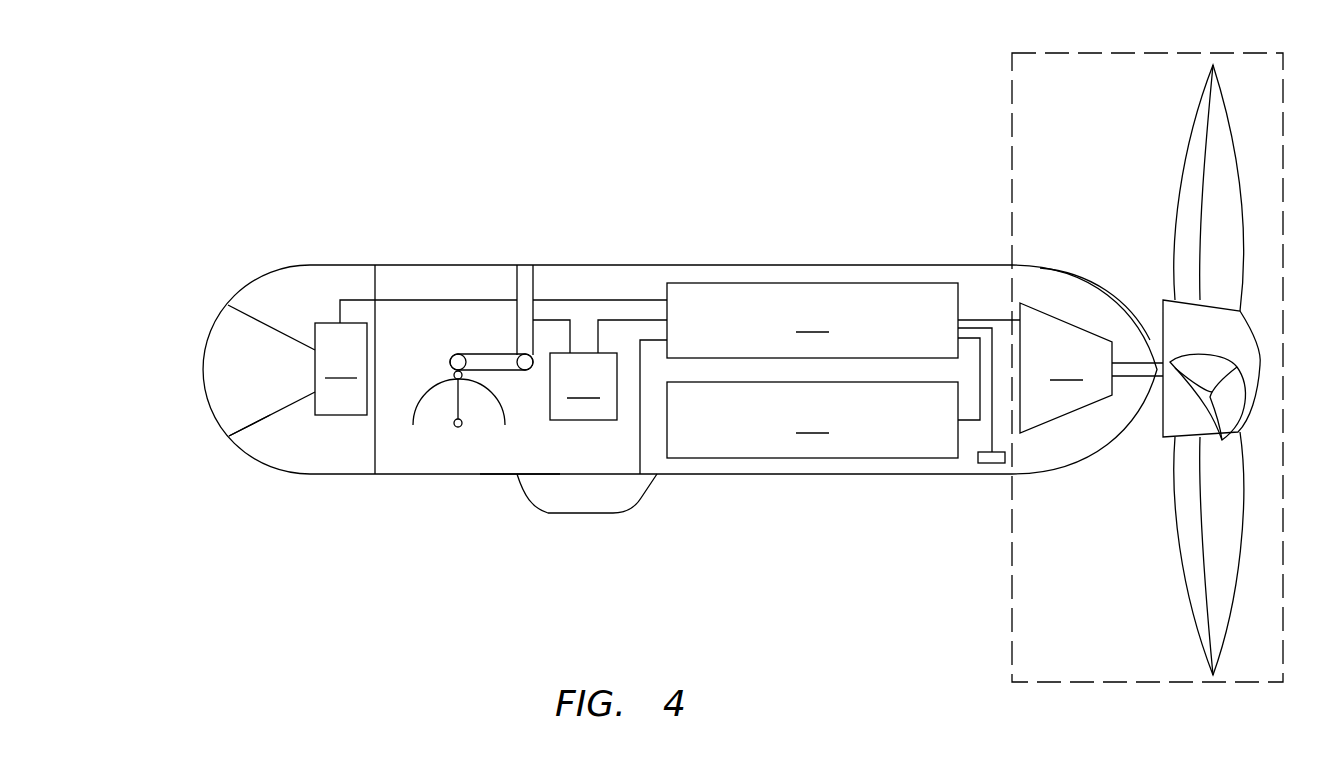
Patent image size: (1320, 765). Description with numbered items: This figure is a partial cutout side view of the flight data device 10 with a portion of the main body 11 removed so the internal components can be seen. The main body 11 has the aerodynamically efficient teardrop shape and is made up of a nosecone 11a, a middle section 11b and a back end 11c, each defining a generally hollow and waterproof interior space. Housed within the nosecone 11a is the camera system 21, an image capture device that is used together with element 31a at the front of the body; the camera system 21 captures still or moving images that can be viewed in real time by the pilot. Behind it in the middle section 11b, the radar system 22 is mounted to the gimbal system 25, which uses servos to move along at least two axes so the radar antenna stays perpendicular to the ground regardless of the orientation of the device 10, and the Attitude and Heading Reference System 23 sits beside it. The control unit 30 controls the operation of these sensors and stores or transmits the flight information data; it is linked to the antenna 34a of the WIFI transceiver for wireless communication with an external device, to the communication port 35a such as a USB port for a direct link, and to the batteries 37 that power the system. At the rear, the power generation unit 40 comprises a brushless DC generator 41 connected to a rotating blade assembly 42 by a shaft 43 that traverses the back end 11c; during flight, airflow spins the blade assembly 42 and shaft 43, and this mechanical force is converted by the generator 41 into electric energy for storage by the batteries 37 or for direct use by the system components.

The flight data device 10 is at (243, 136).
The main body 11 is at (182, 437).
The nosecone 11a is at (262, 295).
The middle section 11b is at (485, 478).
The back end 11c is at (1107, 296).
The camera system 21 is at (416, 357).
The radar system 22 is at (432, 415).
The Attitude and Heading Reference System (AHRS) 23 is at (600, 360).
The gimbal system 25 is at (490, 355).
The control unit 30 is at (830, 378).
The nose support strut 31a is at (253, 405).
The antenna 34a is at (588, 497).
The communication port 35a is at (995, 463).
The batteries 37 is at (823, 398).
The power generation unit 40 is at (1012, 105).
The brushless DC generator 41 is at (1066, 368).
The rotating blade assembly 42 is at (1188, 163).
The shaft 43 is at (1130, 378).